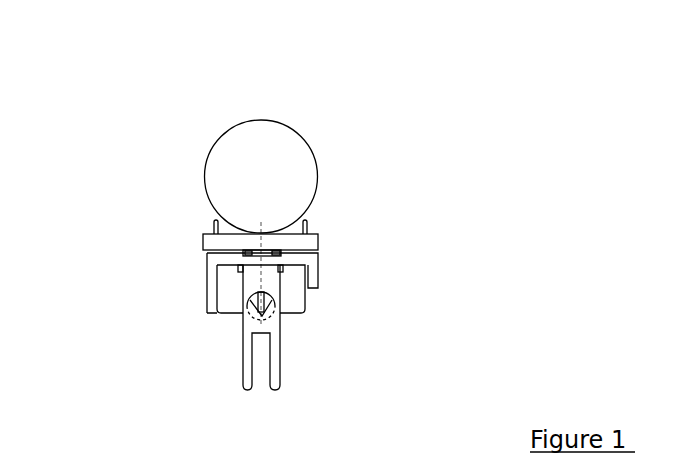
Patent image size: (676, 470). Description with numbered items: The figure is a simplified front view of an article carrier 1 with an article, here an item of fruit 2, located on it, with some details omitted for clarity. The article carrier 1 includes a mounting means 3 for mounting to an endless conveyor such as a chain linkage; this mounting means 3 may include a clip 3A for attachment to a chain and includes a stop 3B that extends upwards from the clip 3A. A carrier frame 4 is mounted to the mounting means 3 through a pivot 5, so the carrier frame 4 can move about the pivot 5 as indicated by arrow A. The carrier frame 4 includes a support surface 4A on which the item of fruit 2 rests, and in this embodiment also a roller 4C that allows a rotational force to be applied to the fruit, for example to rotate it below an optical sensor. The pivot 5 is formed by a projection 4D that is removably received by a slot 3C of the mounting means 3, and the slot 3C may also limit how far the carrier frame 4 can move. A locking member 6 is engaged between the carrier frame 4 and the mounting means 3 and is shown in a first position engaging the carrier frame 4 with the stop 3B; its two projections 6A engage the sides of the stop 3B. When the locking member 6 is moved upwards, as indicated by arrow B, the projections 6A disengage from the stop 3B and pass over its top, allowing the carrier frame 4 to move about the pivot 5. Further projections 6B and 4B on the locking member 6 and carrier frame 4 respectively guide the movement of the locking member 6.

The article carrier 1 is at (140, 242).
The item of fruit 2 is at (288, 160).
The mounting means 3 is at (226, 352).
The clip 3A is at (300, 338).
The stop 3B is at (157, 297).
The slot 3C is at (273, 307).
The carrier frame 4 is at (333, 246).
The support surface 4A is at (308, 233).
The projection 4B is at (248, 250).
The roller 4C is at (211, 310).
The projection 4D is at (176, 343).
The pivot 5 is at (267, 307).
The locking member 6 is at (332, 298).
The projections 6A is at (243, 268).
The projection 6B is at (277, 253).